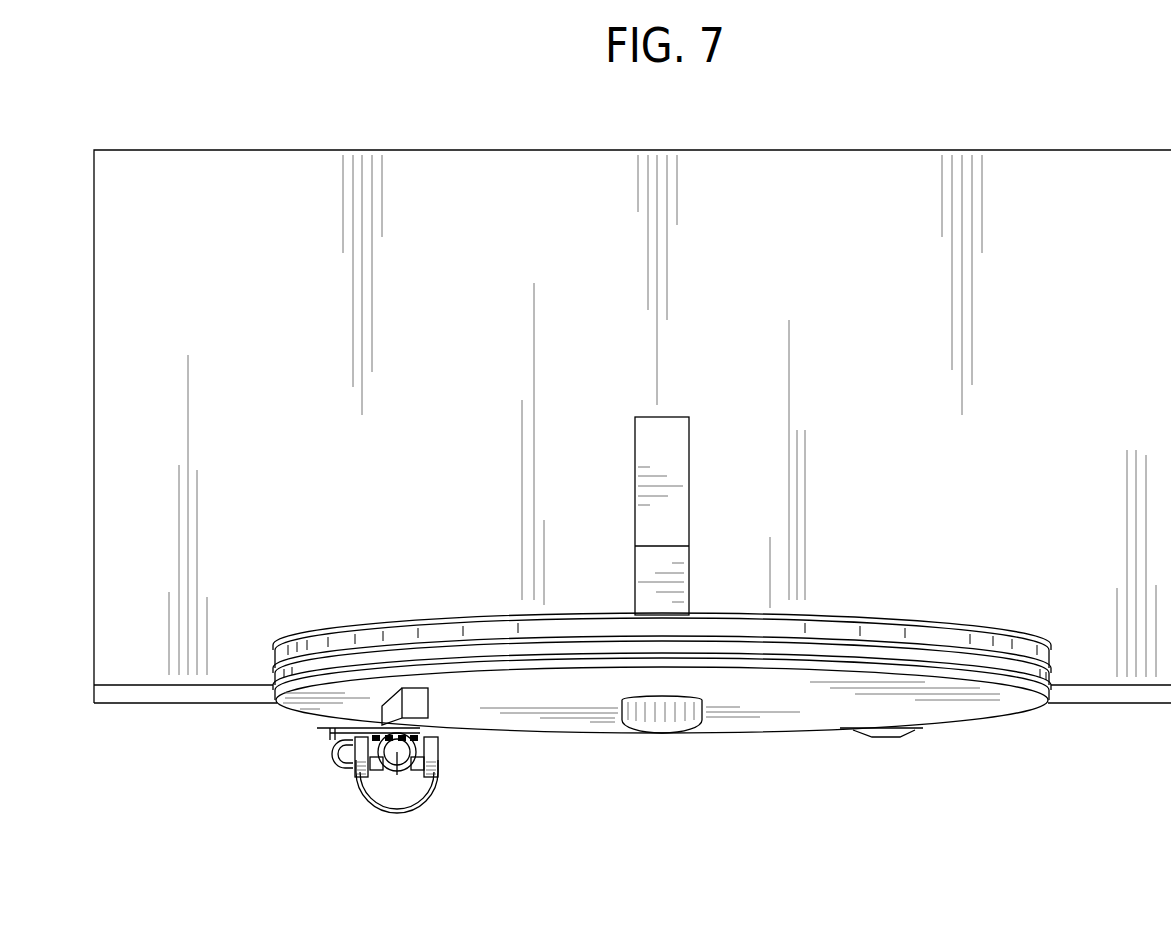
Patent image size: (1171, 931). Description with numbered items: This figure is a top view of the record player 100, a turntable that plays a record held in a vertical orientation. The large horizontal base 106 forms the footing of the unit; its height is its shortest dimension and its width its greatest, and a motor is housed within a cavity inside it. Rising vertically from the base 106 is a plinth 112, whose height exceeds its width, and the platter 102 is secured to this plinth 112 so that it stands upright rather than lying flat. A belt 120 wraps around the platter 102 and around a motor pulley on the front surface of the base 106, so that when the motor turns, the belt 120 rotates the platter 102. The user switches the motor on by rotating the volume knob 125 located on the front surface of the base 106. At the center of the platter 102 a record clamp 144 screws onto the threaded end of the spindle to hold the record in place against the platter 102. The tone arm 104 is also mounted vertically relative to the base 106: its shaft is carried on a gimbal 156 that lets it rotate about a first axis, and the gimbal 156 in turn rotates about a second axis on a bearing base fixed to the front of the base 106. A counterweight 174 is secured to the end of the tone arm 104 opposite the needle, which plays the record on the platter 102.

The record player 100 is at (1060, 82).
The platter 102 is at (985, 707).
The tone arm 104 is at (384, 795).
The base 106 is at (1074, 373).
The plinth 112 is at (670, 438).
The belt 120 is at (765, 658).
The volume knob 125 is at (882, 738).
The record clamp 144 is at (665, 717).
The gimbal 156 is at (433, 750).
The counterweight 174 is at (417, 790).